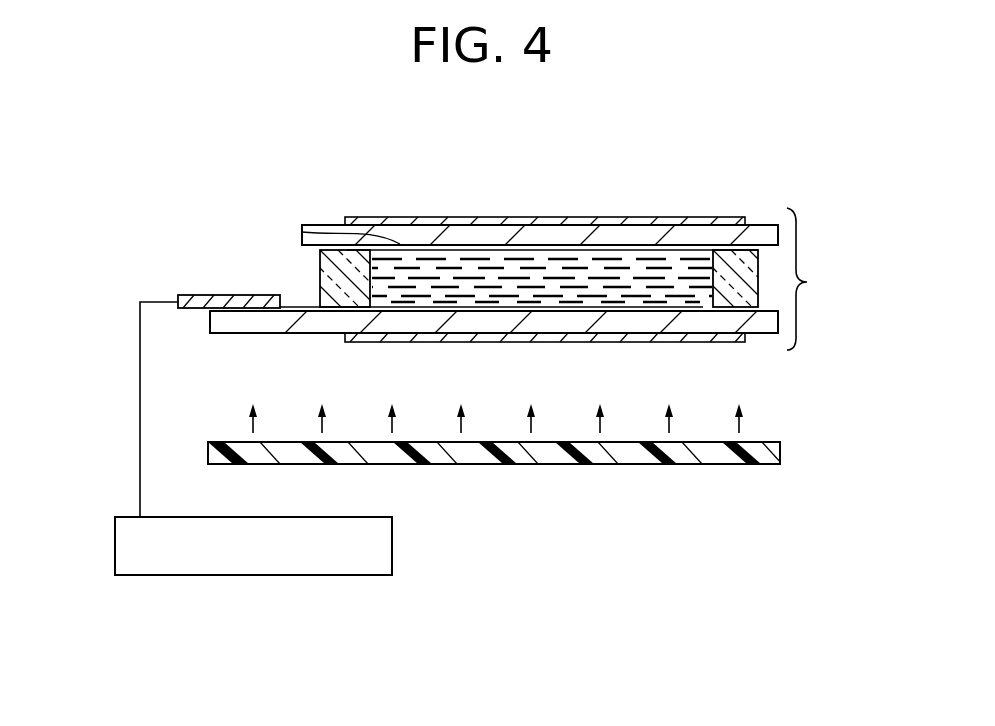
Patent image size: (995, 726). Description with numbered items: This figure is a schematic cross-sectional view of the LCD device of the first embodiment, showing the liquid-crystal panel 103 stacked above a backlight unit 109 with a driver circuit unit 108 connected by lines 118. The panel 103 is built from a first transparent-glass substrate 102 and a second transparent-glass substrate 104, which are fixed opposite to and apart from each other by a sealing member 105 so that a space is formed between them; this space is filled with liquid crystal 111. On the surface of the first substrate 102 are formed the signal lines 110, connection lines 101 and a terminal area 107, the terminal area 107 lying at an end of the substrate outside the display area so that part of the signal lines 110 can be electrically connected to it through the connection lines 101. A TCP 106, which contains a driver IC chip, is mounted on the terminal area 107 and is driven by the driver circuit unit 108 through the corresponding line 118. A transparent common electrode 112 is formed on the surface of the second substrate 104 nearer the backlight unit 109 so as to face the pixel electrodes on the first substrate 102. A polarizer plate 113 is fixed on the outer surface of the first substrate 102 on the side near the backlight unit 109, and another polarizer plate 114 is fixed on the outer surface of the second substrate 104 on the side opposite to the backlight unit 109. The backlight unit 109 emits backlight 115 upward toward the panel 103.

The connection lines 101 is at (298, 303).
The first transparent-glass substrate 102 is at (770, 330).
The liquid-crystal panel 103 is at (866, 297).
The second transparent-glass substrate 104 is at (541, 232).
The sealing member 105 is at (322, 262).
The TCP 106 is at (230, 295).
The terminal area 107 is at (247, 312).
The driver circuit unit 108 is at (238, 575).
The backlight unit 109 is at (597, 458).
The signal lines 110 is at (605, 302).
The liquid crystal 111 is at (645, 268).
The transparent common electrode 112 is at (302, 232).
The polarizer plate 113 is at (730, 342).
The polarizer plate 114 is at (397, 220).
The backlight 115 is at (741, 428).
The lines 118 is at (140, 427).